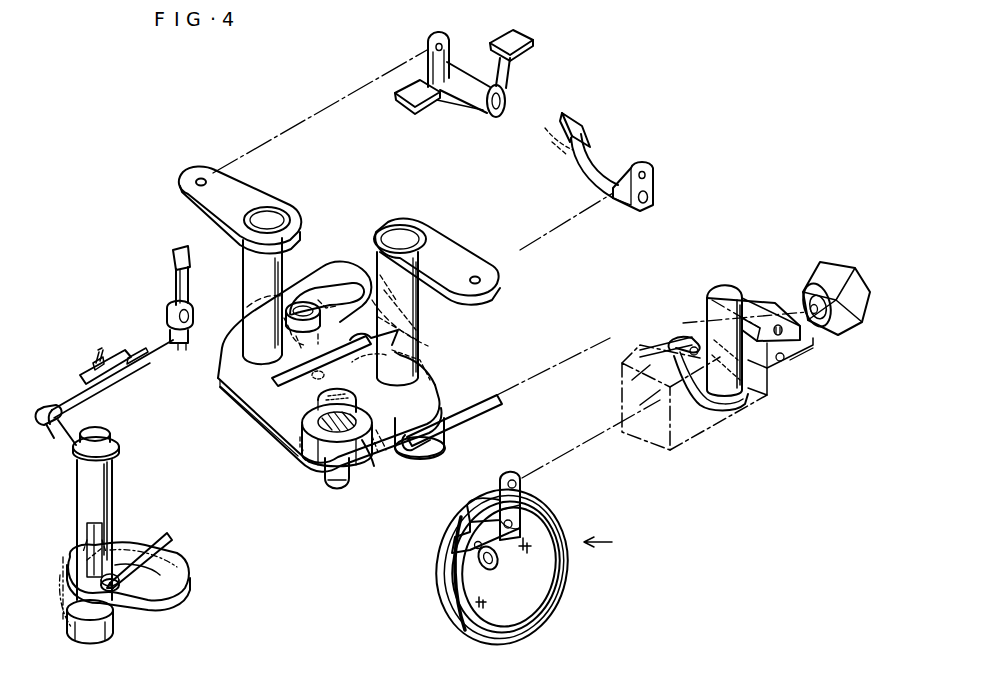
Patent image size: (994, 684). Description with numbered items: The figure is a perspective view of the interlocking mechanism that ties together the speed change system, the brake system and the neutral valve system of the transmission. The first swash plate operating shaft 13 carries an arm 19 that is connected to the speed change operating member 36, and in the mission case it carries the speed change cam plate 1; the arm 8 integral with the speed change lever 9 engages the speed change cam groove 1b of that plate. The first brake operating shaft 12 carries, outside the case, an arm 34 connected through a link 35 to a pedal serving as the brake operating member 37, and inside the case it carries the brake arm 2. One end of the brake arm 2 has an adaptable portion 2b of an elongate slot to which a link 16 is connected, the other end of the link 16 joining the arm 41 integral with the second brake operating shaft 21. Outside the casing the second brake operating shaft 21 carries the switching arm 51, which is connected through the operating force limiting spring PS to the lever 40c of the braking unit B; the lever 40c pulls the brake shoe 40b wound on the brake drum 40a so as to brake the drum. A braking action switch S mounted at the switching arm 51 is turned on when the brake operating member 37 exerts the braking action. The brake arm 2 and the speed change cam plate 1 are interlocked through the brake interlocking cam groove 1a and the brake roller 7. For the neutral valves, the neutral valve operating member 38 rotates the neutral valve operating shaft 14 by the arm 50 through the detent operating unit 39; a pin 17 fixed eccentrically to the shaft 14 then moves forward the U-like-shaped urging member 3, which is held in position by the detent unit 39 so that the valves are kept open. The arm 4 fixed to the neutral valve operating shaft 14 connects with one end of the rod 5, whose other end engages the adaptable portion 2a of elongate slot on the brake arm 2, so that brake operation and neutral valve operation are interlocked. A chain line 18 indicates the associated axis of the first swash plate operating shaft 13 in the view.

The speed change cam plate 1 is at (256, 418).
The brake interlocking cam groove 1a is at (346, 287).
The speed change cam groove 1b is at (296, 442).
The brake arm 2 is at (432, 396).
The adaptable portion of elongate slot 2a is at (408, 340).
The adaptable portion of elongate slot 2b is at (424, 460).
The urging member 3 is at (190, 581).
The arm 4 is at (64, 620).
The rod 5 is at (236, 399).
The brake roller 7 is at (296, 304).
The arm 8 is at (378, 452).
The speed change lever 9 is at (335, 494).
The first brake operating shaft 12 is at (422, 305).
The first swash plate operating shaft 13 is at (246, 272).
The neutral valve operating shaft 14 is at (112, 471).
The link 16 is at (486, 400).
The pin 17 is at (96, 520).
The axis line 18 is at (340, 102).
The arm 19 is at (256, 180).
The second brake operating shaft 21 is at (703, 332).
The arm 34 is at (456, 250).
The link 35 is at (536, 238).
The speed change operating member 36 is at (515, 75).
The brake operating member 37 is at (628, 136).
The neutral valve operating member 38 is at (172, 286).
The detent operating unit 39 is at (118, 383).
The brake drum 40a is at (557, 572).
The brake shoe 40b is at (456, 622).
The lever 40c is at (505, 486).
The arm 41 is at (630, 396).
The arm 50 is at (76, 413).
The switching arm 51 is at (752, 300).
The braking action switch S is at (853, 274).
The braking unit B is at (609, 546).
The operating force limiting spring PS is at (705, 432).